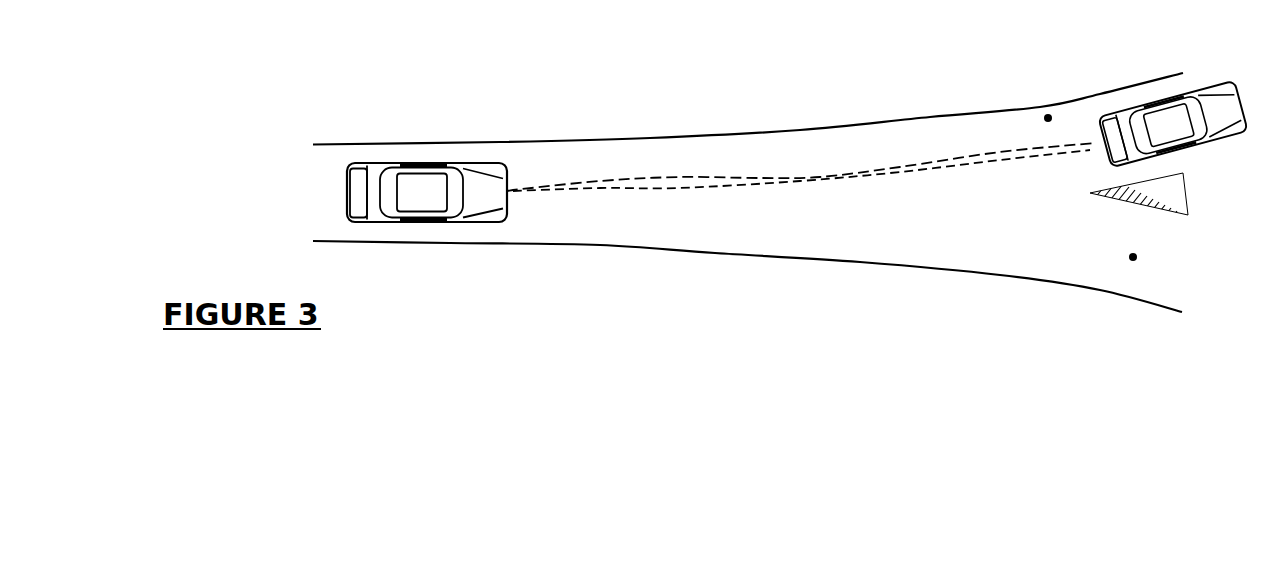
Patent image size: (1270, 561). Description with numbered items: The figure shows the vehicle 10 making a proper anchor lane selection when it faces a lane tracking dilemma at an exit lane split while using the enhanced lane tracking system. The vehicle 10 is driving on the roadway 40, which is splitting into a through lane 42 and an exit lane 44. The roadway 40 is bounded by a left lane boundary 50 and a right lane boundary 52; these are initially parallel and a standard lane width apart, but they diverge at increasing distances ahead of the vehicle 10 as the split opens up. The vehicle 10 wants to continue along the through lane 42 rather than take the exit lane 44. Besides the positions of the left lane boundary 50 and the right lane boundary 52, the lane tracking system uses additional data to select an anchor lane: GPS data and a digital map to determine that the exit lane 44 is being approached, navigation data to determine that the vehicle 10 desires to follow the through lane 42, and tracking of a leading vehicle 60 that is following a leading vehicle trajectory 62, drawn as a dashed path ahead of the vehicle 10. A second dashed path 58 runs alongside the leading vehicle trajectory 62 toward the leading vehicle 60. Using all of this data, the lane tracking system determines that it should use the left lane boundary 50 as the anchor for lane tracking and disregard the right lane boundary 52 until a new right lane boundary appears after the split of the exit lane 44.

The vehicle 10 is at (347, 172).
The roadway 40 is at (553, 103).
The through lane 42 is at (1048, 118).
The exit lane 44 is at (1133, 257).
The left lane boundary 50 is at (748, 130).
The right lane boundary 52 is at (715, 253).
The planned path 58 is at (967, 168).
The leading vehicle 60 is at (1213, 85).
The leading vehicle trajectory 62 is at (682, 176).